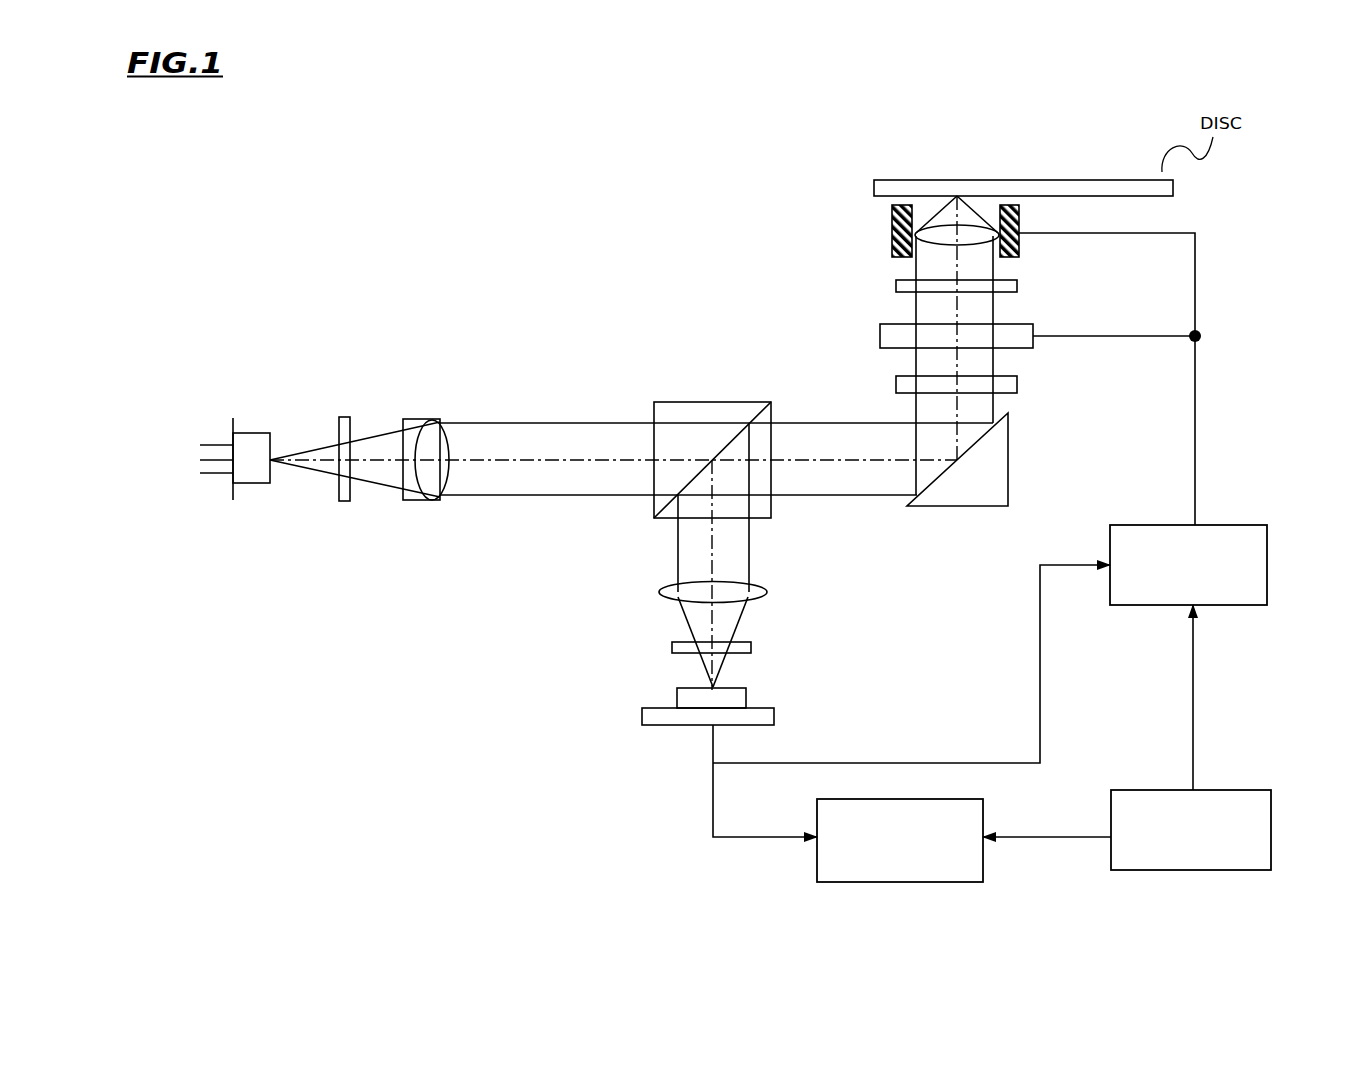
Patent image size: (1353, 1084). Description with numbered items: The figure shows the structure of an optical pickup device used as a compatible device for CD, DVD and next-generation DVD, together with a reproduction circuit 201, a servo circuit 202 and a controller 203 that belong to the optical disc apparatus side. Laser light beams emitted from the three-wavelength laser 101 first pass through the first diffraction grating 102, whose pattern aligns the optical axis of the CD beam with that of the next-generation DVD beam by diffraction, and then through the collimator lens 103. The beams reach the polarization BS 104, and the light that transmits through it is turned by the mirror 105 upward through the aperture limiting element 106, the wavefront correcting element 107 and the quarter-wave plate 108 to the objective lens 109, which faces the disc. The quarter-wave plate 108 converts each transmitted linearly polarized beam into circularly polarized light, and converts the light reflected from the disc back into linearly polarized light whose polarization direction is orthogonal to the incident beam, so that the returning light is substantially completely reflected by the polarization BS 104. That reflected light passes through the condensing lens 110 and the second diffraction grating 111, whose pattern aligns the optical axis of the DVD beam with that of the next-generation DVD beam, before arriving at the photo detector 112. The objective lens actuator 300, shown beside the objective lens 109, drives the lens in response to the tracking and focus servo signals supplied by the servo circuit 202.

The three-wavelength laser 101 is at (282, 393).
The first diffraction grating 102 is at (333, 505).
The collimator lens 103 is at (420, 416).
The polarization BS 104 is at (762, 520).
The mirror 105 is at (1002, 462).
The aperture limiting element 106 is at (885, 375).
The wavefront correcting element 107 is at (883, 315).
The λ/4 plate 108 is at (1018, 285).
The objective lens 109 is at (962, 235).
The condensing lens 110 is at (763, 602).
The second diffraction grating 111 is at (665, 642).
The photo detector 112 is at (658, 732).
The objective lens actuator 300 is at (882, 227).
The reproduction circuit 201 is at (939, 874).
The servo circuit 202 is at (1235, 533).
The controller 203 is at (1232, 798).